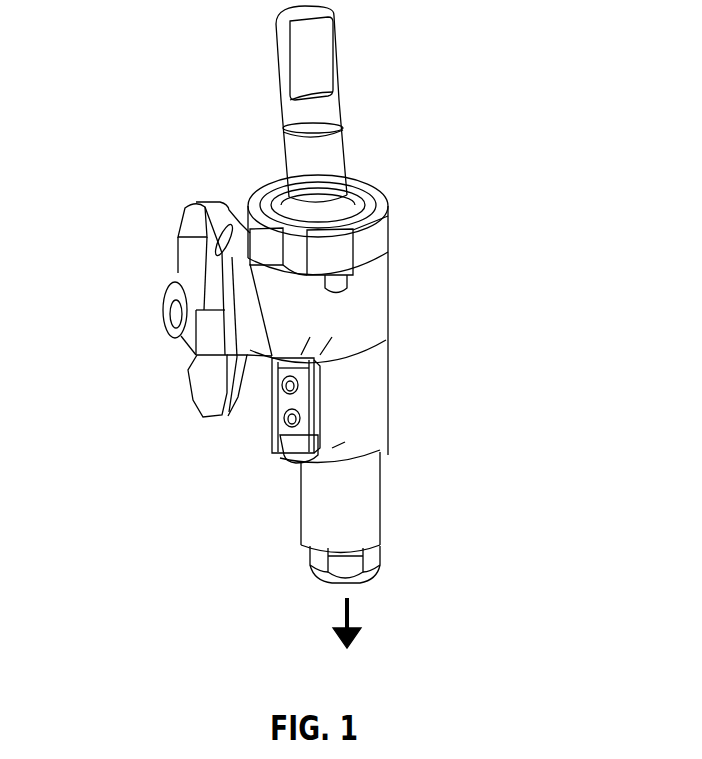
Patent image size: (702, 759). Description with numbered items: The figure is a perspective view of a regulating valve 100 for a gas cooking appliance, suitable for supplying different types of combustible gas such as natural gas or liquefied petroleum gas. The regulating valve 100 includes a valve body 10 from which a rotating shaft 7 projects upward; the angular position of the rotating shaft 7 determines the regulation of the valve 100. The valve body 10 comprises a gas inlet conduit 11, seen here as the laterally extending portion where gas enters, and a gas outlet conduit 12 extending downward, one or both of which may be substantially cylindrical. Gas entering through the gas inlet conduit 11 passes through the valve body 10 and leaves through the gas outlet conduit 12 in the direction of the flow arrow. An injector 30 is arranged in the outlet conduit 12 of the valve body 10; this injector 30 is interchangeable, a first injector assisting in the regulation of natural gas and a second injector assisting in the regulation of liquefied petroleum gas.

The regulating valve 100 is at (180, 149).
The rotating shaft 7 is at (314, 70).
The valve body 10 is at (403, 325).
The gas inlet conduit 11 is at (187, 313).
The gas outlet conduit 12 is at (352, 497).
The injector 30 is at (398, 559).